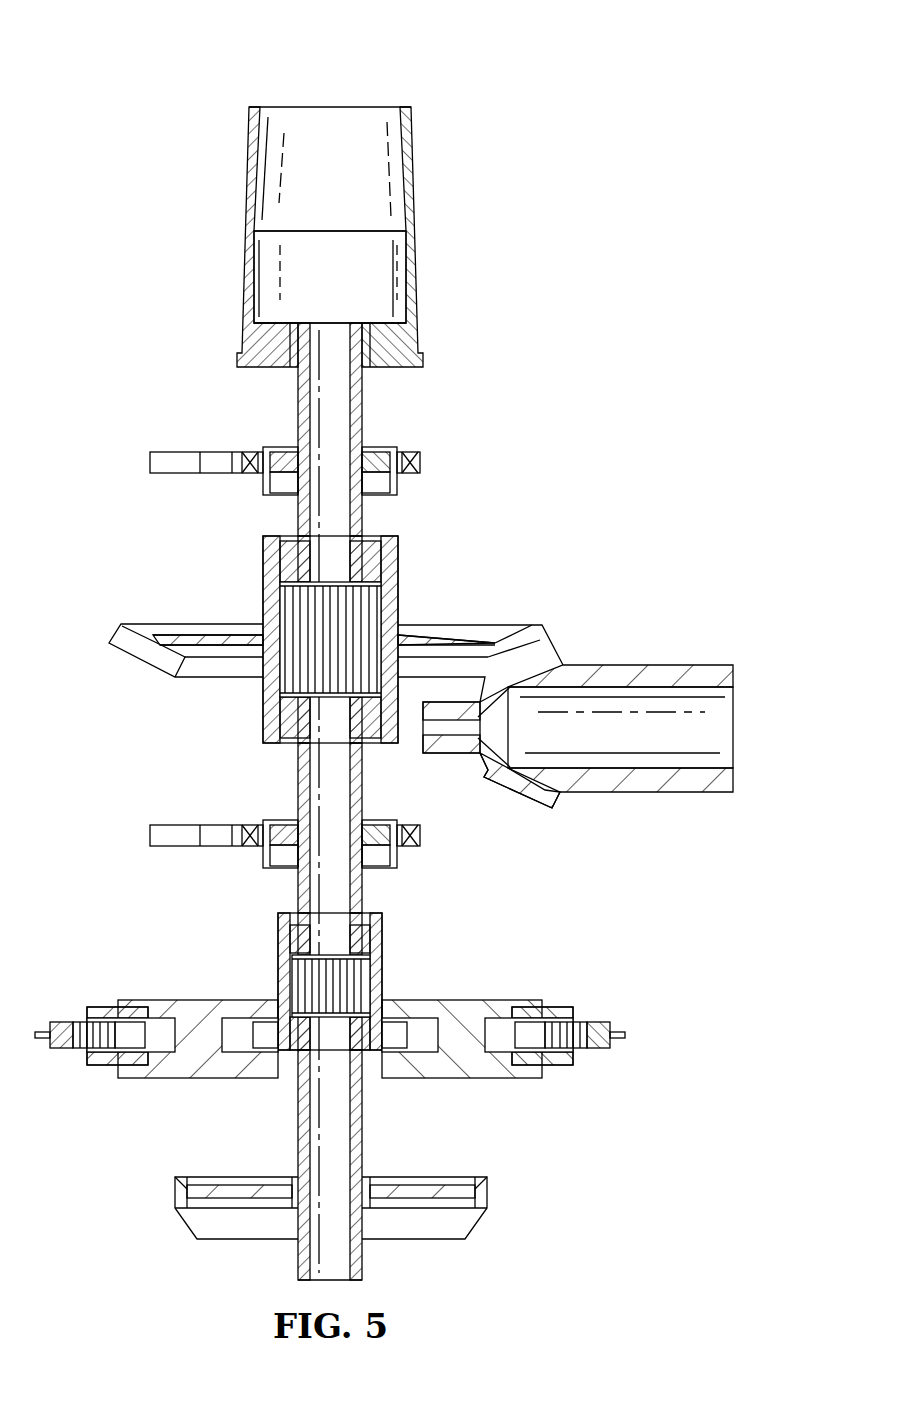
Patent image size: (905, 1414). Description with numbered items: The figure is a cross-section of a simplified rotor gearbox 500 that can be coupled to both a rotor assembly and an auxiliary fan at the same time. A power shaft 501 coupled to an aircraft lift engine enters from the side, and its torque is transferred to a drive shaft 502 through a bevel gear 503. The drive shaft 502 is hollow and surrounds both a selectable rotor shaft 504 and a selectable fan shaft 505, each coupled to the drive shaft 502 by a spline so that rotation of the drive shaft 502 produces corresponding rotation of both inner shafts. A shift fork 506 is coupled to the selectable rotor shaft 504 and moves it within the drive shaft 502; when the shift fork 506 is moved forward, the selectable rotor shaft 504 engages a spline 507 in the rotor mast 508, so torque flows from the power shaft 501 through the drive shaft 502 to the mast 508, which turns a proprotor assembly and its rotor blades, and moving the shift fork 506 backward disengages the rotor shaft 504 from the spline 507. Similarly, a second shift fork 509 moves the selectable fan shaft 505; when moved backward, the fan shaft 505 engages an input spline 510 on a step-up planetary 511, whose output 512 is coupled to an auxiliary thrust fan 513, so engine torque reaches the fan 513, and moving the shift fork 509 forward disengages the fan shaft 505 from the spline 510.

The rotor gearbox 500 is at (499, 73).
The power shaft 501 is at (648, 675).
The drive shaft 502 is at (268, 580).
The bevel gear 503 is at (508, 620).
The selectable rotor shaft 504 is at (357, 412).
The selectable fan shaft 505 is at (357, 783).
The shift fork 506 is at (175, 452).
The spline 507 is at (252, 341).
The rotor mast 508 is at (353, 293).
The shift fork 509 is at (175, 848).
The input spline 510 is at (375, 958).
The step-up planetary 511 is at (197, 1072).
The output 512 is at (355, 1133).
The auxiliary thrust fan 513 is at (175, 1192).